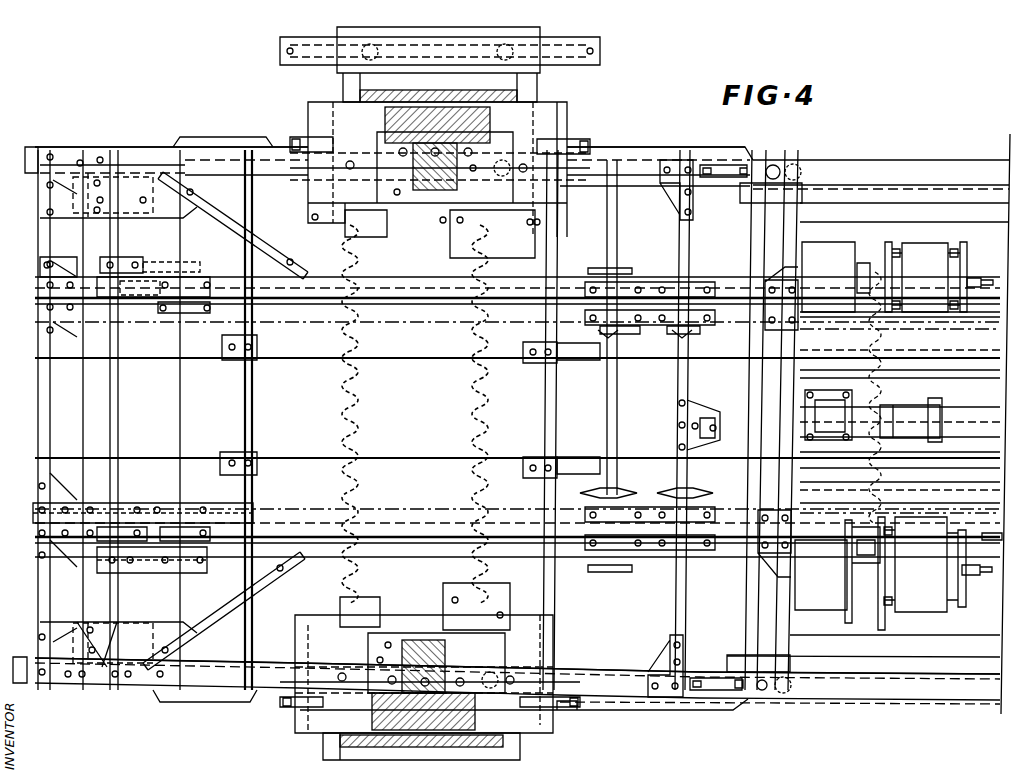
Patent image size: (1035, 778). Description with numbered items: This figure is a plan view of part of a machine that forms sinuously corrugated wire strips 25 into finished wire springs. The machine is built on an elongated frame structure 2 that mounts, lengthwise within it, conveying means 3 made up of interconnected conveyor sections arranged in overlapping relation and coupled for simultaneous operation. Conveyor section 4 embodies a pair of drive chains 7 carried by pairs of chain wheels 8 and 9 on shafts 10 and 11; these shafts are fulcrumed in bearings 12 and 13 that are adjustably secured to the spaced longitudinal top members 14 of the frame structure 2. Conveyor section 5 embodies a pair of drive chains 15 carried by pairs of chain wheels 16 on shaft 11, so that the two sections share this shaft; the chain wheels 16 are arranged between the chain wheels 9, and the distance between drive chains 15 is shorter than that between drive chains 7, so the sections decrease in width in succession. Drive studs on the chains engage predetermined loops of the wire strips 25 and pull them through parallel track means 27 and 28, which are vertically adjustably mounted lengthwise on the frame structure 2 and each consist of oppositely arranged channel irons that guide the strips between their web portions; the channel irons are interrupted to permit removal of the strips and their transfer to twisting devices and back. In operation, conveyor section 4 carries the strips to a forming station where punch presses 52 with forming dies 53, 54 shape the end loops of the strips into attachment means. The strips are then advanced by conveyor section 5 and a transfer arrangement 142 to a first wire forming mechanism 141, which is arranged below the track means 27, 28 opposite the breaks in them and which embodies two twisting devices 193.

The frame structure 2 is at (689, 716).
The conveying means 3 is at (428, 276).
The conveyor section 4 is at (330, 276).
The conveyor section 5 is at (725, 326).
The drive chains 7 is at (397, 278).
The chain wheels 8 is at (133, 262).
The chain wheels 9 is at (628, 280).
The shaft 10 is at (118, 403).
The shaft 11 is at (606, 423).
The bearings 12 is at (140, 503).
The bearings 13 is at (579, 360).
The longitudinal top members 14 is at (441, 311).
The drive chains 15 is at (977, 330).
The chain wheels 16 is at (640, 348).
The sinuously corrugated wire strips 25 is at (360, 407).
The track means 27 is at (148, 358).
The track means 28 is at (143, 456).
The punch presses 52 is at (567, 113).
The forming die 53 is at (345, 232).
The forming die 54 is at (540, 225).
The first wire forming mechanism 141 is at (888, 241).
The transfer arrangement 142 is at (886, 403).
The twisting device 193 is at (948, 268).